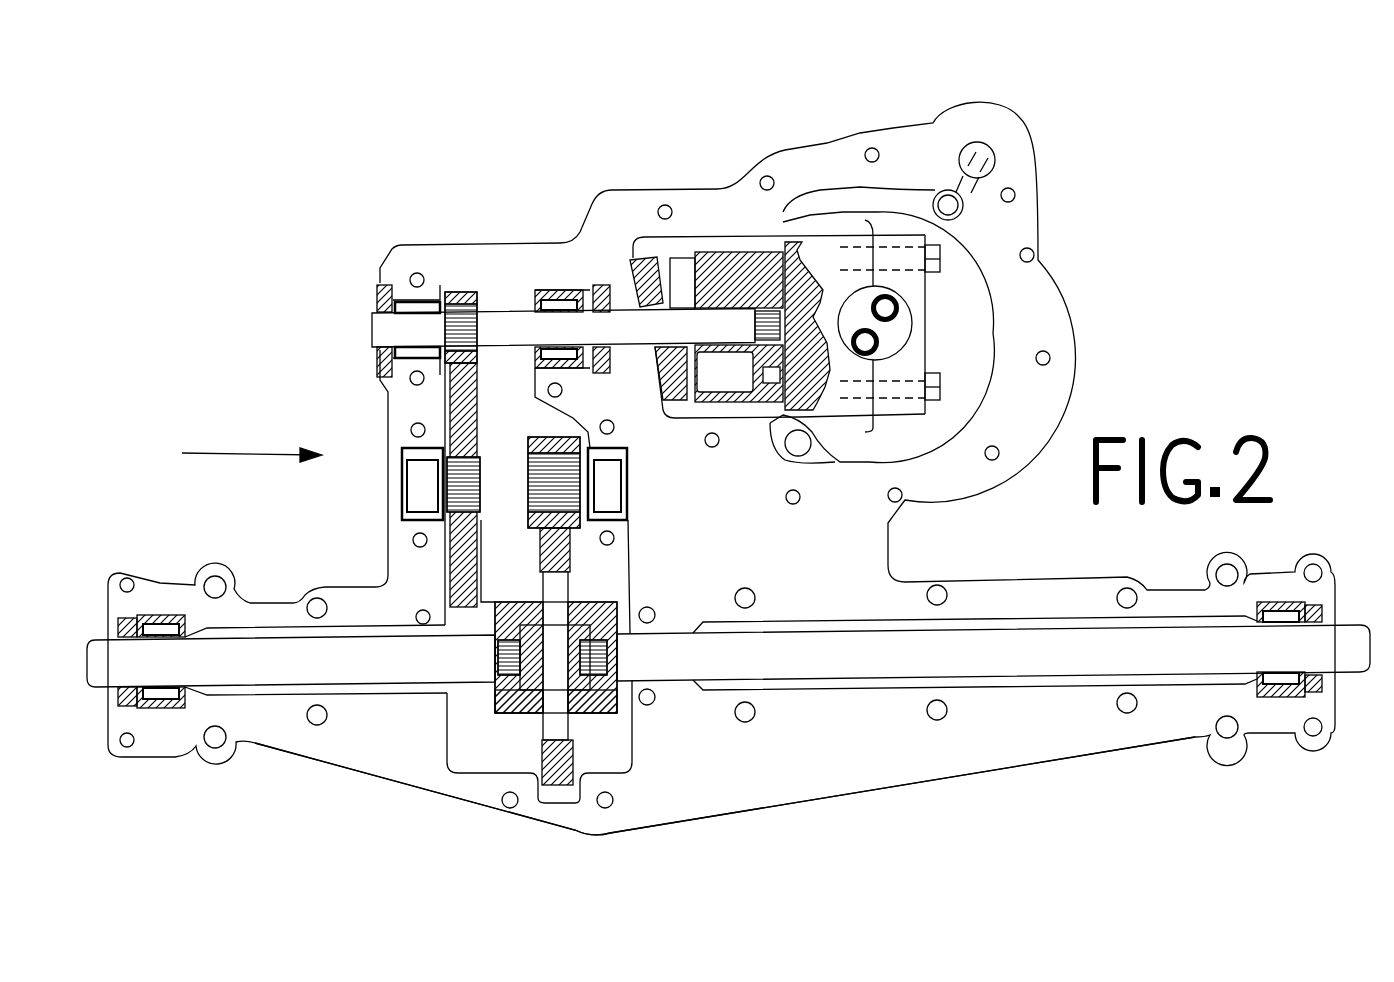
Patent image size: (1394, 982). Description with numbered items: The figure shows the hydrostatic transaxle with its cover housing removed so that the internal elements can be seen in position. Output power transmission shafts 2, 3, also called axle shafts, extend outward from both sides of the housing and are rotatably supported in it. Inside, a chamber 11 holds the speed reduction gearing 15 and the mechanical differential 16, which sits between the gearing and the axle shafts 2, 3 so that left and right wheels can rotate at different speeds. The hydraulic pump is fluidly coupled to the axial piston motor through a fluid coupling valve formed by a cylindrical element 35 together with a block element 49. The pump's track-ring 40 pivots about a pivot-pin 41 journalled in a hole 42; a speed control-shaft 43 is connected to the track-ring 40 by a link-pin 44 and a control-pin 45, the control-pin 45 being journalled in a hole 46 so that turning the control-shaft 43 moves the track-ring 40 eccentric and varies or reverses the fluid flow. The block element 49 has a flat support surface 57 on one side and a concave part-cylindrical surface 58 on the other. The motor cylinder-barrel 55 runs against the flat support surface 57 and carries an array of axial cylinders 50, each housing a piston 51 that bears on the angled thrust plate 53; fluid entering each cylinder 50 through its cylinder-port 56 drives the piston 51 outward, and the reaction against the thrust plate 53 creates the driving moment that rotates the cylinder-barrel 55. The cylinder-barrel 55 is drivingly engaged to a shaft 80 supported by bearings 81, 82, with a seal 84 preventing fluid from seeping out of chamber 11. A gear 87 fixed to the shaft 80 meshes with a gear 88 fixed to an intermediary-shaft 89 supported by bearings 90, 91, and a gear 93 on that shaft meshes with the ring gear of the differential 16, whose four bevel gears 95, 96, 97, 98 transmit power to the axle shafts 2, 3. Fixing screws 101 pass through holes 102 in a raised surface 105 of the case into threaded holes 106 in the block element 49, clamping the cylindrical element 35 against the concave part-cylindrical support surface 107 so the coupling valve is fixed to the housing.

The output power transmission shaft 2 is at (1338, 640).
The output power transmission shaft 3 is at (110, 657).
The chamber 11 is at (522, 399).
The speed reduction gearing 15 is at (231, 449).
The mechanical differential 16 is at (598, 848).
The cylindrical element 35 is at (886, 352).
The track-ring 40 is at (997, 352).
The pivot-pin 41 is at (793, 447).
The hole 42 is at (813, 440).
The speed control-shaft 43 is at (975, 142).
The link-pin 44 is at (968, 187).
The control-pin 45 is at (957, 207).
The hole 46 is at (935, 185).
The block element 49 is at (820, 262).
The axial cylinder 50 is at (727, 348).
The piston 51 is at (742, 392).
The thrust plate 53 is at (635, 278).
The cylinder-barrel 55 is at (712, 260).
The cylinder-port 56 is at (770, 372).
The flat support surface 57 is at (838, 420).
The concave part-cylindrical surface 58 is at (867, 283).
The shaft 80 is at (513, 327).
The bearing 81 is at (537, 289).
The bearing 82 is at (408, 302).
The seal 84 is at (377, 286).
The gear 87 is at (465, 292).
The gear 88 is at (455, 409).
The intermediary-shaft 89 is at (510, 493).
The bearing 90 is at (415, 512).
The bearing 91 is at (615, 519).
The gear 93 is at (560, 445).
The bevel gear 95 is at (572, 604).
The bevel gear 96 is at (602, 710).
The bevel gear 97 is at (498, 693).
The bevel gear 98 is at (537, 708).
The fixing screw 101 is at (947, 398).
The hole 102 is at (945, 288).
The raised surface 105 is at (960, 352).
The threaded hole 106 is at (838, 253).
The concave part-cylindrical support surface 107 is at (912, 330).